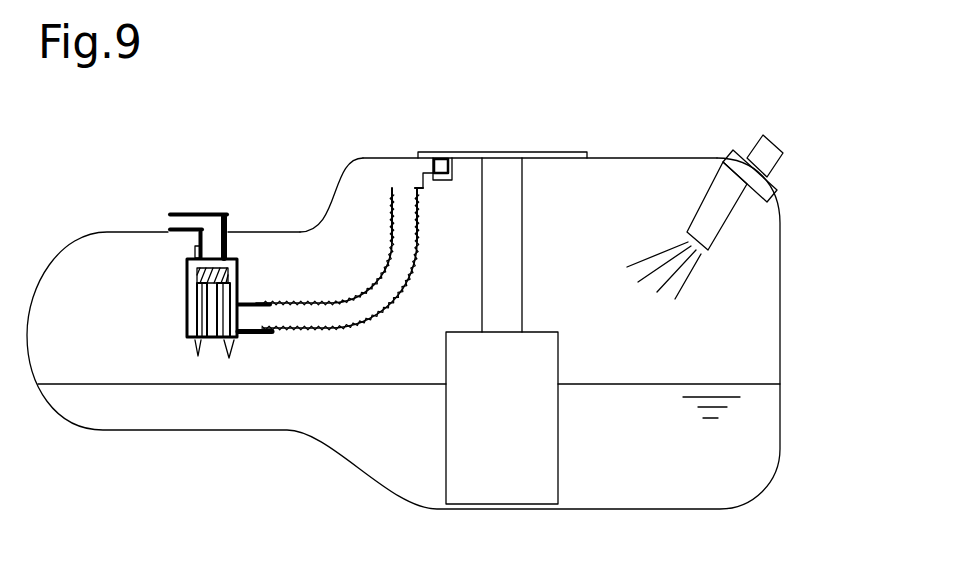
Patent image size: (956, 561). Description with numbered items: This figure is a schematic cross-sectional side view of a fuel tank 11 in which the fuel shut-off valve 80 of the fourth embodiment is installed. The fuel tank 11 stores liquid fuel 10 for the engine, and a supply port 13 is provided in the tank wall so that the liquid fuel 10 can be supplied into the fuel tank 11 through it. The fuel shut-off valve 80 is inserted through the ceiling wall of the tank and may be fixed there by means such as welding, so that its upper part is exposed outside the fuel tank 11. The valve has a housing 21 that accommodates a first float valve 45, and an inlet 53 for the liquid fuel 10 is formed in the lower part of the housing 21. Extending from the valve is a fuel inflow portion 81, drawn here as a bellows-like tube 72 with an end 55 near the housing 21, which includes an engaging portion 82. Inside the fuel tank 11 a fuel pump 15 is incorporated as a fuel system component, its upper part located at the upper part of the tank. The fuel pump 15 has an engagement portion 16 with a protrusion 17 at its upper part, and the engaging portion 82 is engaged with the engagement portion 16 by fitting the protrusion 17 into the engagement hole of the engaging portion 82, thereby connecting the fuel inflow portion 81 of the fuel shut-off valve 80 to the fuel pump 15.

The liquid fuel 10 is at (636, 394).
The fuel tank 11 is at (620, 158).
The supply port 13 is at (670, 240).
The fuel pump 15 is at (548, 426).
The engagement portion 16 is at (452, 170).
The protrusion 17 is at (438, 158).
The housing 21 is at (187, 318).
The first float valve 45 is at (240, 274).
The inlet 53 is at (257, 320).
The tube end 55 is at (392, 188).
The bellows tube 72 is at (348, 330).
The fuel shut-off valve 80 is at (158, 291).
The fuel inflow portion 81 is at (386, 303).
The engaging portion 82 is at (430, 192).